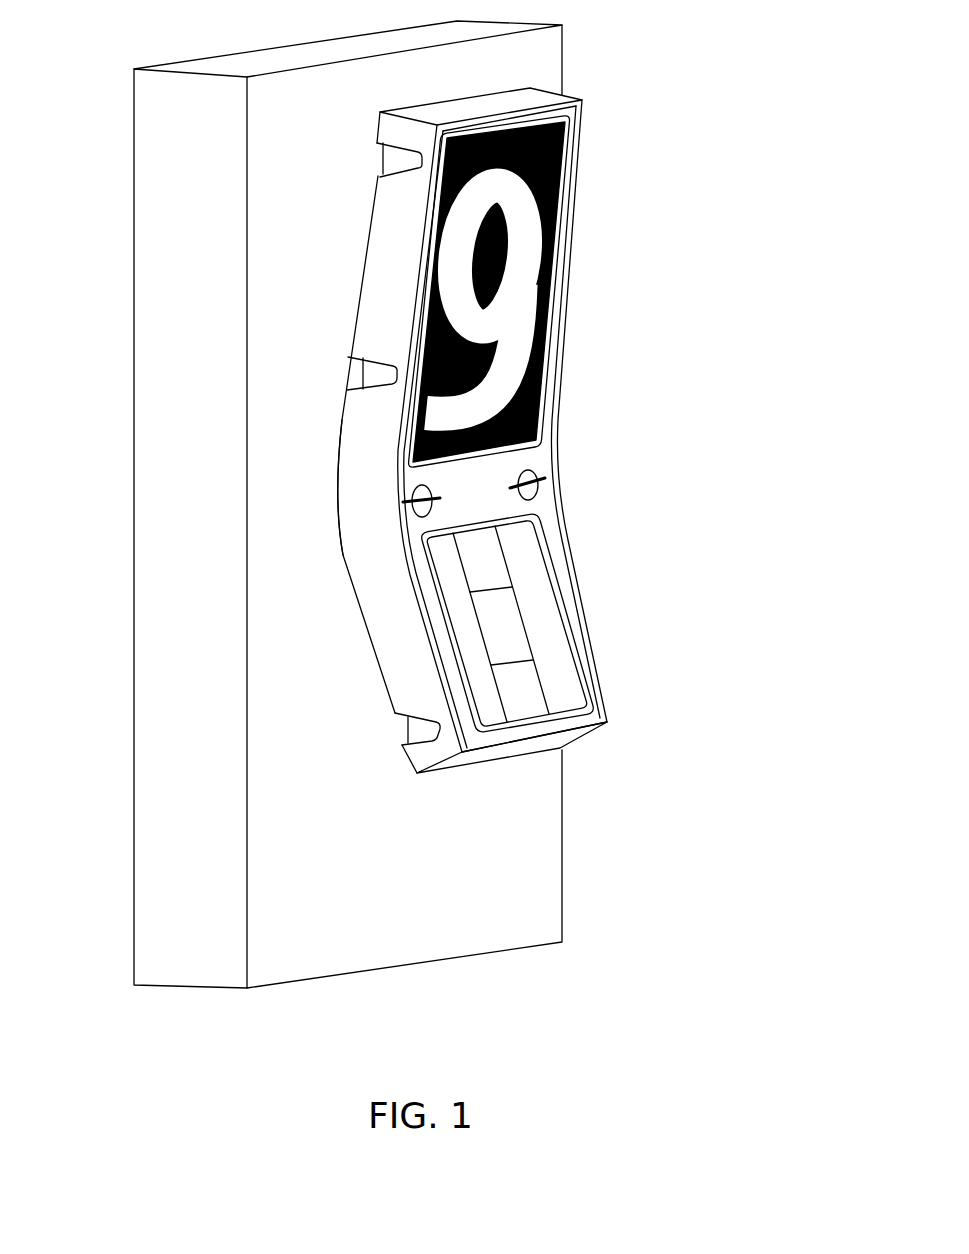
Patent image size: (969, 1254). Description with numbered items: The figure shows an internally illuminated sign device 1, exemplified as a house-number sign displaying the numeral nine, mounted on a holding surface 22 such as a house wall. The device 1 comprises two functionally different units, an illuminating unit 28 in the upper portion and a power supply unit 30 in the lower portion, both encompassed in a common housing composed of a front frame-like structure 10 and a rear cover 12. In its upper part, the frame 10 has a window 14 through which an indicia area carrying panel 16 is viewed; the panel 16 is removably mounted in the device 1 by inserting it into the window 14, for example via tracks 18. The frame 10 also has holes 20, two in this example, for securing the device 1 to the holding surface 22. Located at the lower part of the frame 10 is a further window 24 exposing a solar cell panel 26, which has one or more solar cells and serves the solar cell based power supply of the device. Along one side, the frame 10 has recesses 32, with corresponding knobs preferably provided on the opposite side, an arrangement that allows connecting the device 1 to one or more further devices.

The sign device 1 is at (780, 70).
The front frame-like structure 10 is at (592, 117).
The rear cover 12 is at (378, 157).
The window 14 is at (557, 223).
The indicia area carrying panel 16 is at (566, 157).
The tracks 18 is at (405, 465).
The holes 20 is at (410, 517).
The holding surface 22 is at (200, 318).
The further window 24 is at (522, 618).
The solar cell panel 26 is at (527, 710).
The illuminating unit 28 is at (723, 102).
The power supply unit 30 is at (720, 505).
The recesses 32 is at (402, 165).